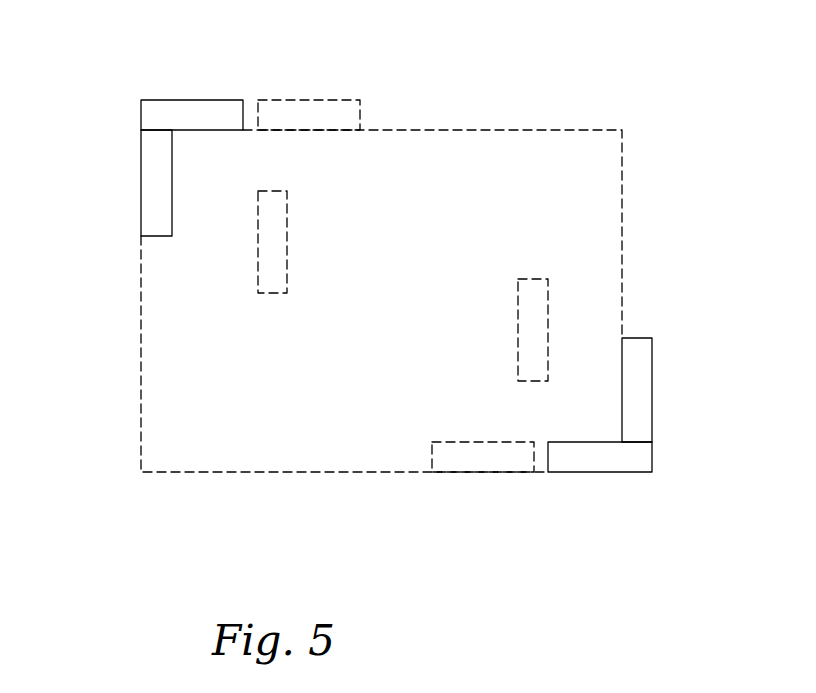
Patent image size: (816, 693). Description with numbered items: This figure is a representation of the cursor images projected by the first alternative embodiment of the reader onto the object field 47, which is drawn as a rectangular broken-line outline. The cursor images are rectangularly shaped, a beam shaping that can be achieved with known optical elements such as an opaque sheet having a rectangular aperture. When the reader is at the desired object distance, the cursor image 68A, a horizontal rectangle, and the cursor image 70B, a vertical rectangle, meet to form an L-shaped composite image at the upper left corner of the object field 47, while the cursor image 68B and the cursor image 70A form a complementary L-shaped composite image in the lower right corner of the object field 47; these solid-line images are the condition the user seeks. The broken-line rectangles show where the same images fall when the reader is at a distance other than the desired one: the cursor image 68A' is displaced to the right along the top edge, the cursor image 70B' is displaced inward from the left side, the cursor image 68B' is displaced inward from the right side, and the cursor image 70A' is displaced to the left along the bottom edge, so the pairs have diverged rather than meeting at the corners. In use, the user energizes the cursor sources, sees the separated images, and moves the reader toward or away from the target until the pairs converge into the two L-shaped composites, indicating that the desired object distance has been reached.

The object field 47 is at (622, 233).
The cursor image 68A is at (190, 73).
The cursor image 68A' is at (317, 75).
The cursor image 68B is at (686, 390).
The cursor image 68B' is at (498, 320).
The cursor image 70A is at (600, 503).
The cursor image 70A' is at (483, 503).
The cursor image 70B is at (116, 183).
The cursor image 70B' is at (311, 252).